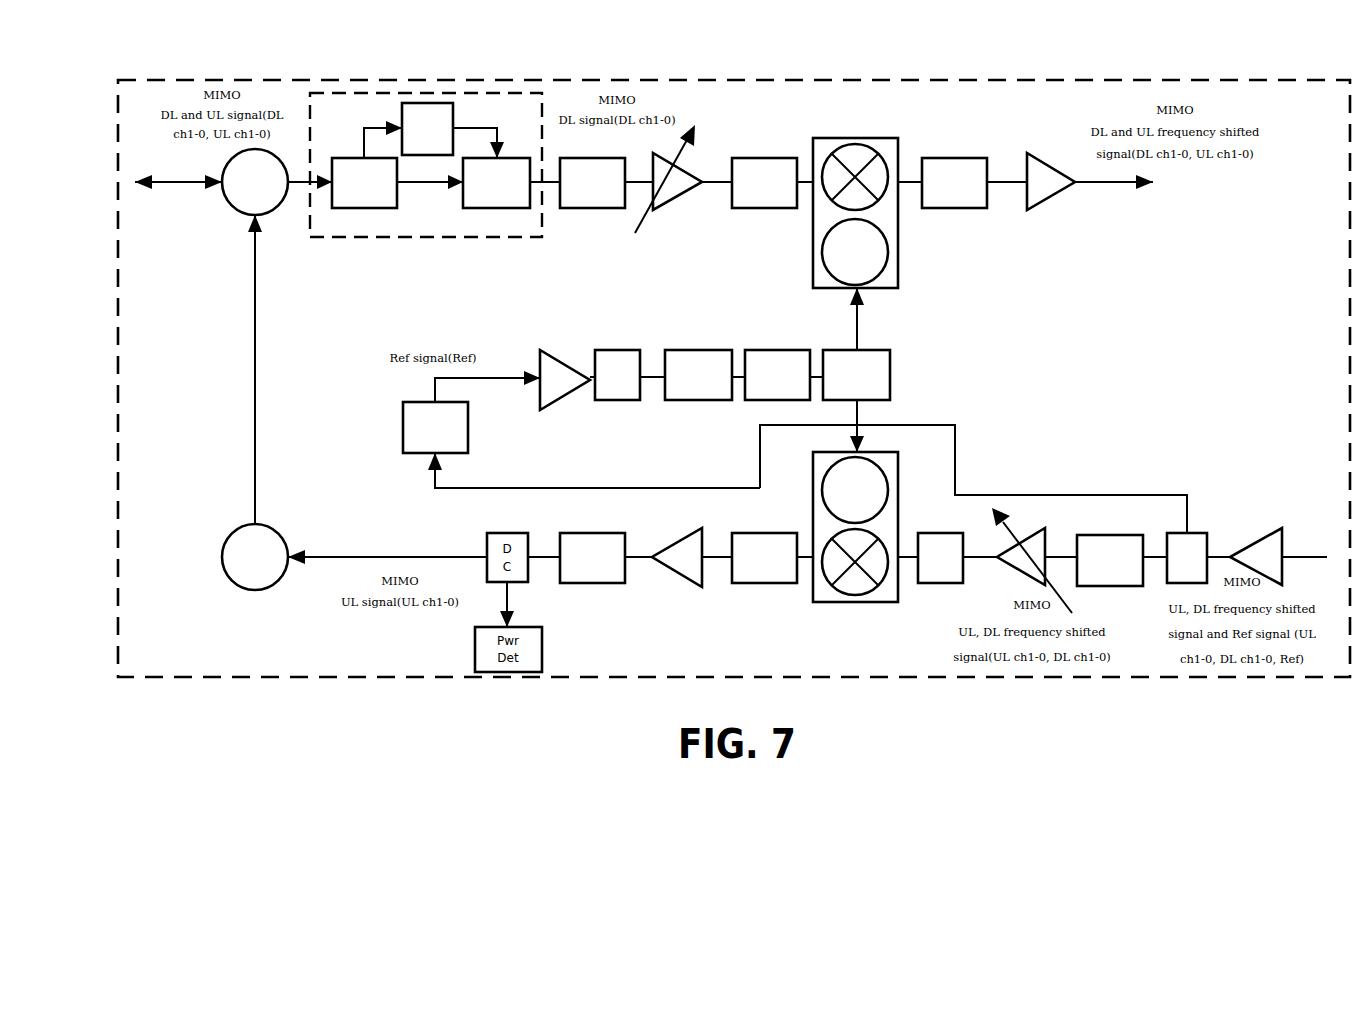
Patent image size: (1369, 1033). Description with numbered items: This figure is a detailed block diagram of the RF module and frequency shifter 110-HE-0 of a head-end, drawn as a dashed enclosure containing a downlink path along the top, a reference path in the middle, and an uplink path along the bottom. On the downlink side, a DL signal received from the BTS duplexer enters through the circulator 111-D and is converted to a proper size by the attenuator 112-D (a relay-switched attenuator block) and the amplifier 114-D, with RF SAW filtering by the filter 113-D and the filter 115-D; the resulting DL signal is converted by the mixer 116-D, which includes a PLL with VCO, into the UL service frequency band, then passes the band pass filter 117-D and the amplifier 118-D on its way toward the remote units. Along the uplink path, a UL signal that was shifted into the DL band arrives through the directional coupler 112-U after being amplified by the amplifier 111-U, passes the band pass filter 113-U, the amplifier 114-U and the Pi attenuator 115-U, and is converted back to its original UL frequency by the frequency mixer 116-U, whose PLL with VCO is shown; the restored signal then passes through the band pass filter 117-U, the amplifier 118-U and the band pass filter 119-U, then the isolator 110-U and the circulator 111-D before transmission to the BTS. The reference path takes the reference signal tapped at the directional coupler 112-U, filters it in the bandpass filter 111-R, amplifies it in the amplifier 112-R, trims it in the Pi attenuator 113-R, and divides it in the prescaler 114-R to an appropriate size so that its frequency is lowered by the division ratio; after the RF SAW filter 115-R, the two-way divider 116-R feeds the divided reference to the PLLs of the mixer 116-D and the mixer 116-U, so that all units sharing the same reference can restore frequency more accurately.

The RF module of head-end and frequency shifter 110-HE-0 is at (645, 80).
The circulator 111-D is at (236, 214).
The attenuator 112-D is at (406, 238).
The RF SAW filter 113-D is at (586, 209).
The amplifier 114-D is at (675, 210).
The RF SAW filter 115-D is at (752, 209).
The frequency mixer 116-D is at (832, 138).
The band pass filter 117-D is at (975, 209).
The amplifier 118-D is at (1052, 210).
The bandpass filter 111-R is at (402, 454).
The amplifier 112-R is at (538, 352).
The Pi attenuator 113-R is at (610, 350).
The prescaler 114-R is at (700, 350).
The RF SAW filter 115-R is at (787, 350).
The 2-way divider 116-R is at (892, 377).
The isolator 110-U is at (236, 585).
The amplifier 111-U is at (1265, 528).
The directional coupler 112-U is at (1182, 532).
The band pass filter 113-U is at (1105, 535).
The variable gain amplifier 114-U is at (1030, 529).
The Pi attenuator 115-U is at (935, 584).
The frequency mixer 116-U is at (855, 603).
The band pass filter 117-U is at (760, 584).
The amplifier 118-U is at (680, 588).
The band pass filter 119-U is at (598, 584).